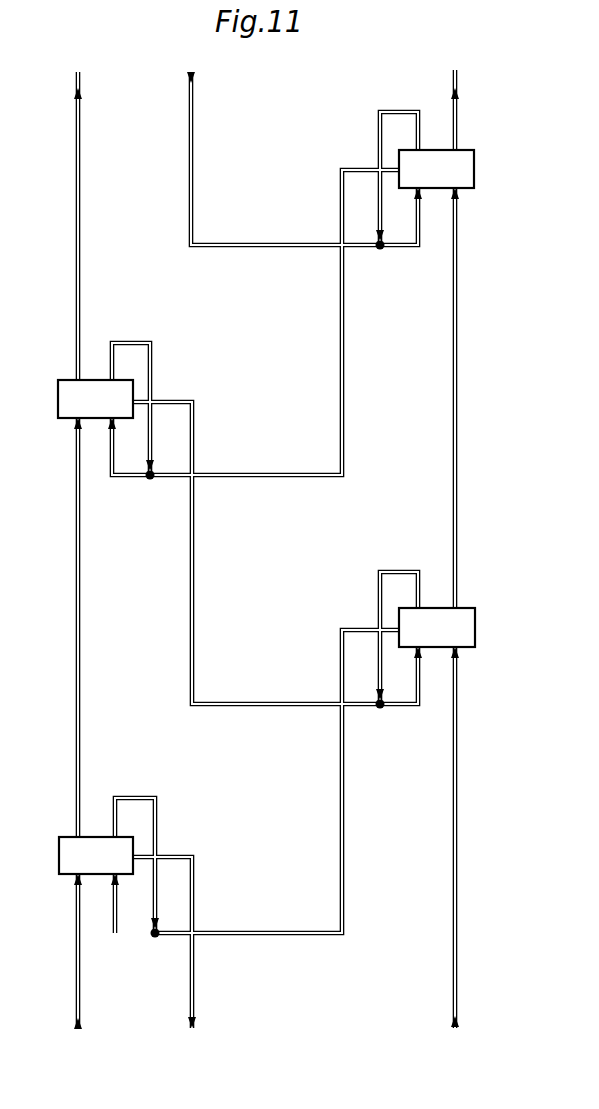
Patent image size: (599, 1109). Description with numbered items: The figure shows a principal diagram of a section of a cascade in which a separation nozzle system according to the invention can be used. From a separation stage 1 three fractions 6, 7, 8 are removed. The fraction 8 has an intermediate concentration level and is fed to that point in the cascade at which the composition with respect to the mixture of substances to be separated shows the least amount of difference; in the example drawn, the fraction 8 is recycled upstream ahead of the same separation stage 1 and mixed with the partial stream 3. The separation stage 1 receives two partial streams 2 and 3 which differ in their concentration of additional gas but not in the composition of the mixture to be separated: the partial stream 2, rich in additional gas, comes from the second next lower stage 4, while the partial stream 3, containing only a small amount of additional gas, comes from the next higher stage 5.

The separation stage 1 is at (58, 400).
The partial stream 2 is at (76, 572).
The partial stream 3 is at (279, 478).
The second next lower stage 4 is at (63, 855).
The next higher stage 5 is at (465, 172).
The fraction 6 is at (76, 310).
The fraction 7 is at (194, 442).
The fraction 8 is at (152, 352).